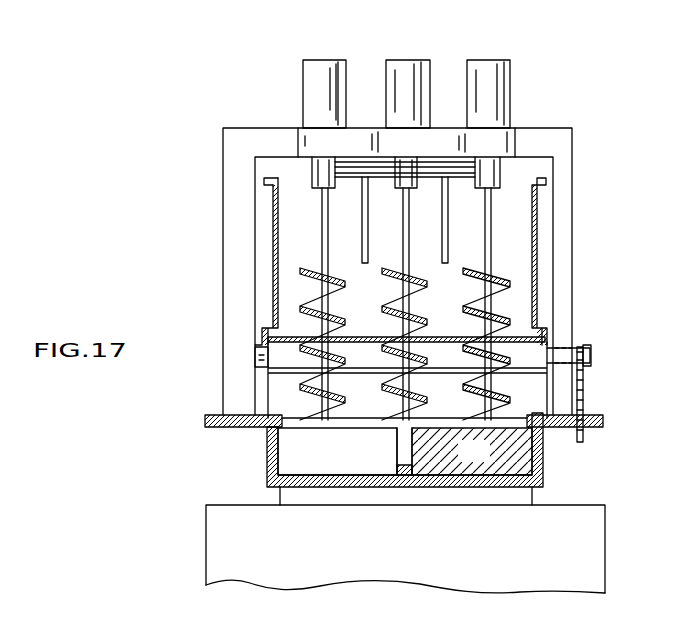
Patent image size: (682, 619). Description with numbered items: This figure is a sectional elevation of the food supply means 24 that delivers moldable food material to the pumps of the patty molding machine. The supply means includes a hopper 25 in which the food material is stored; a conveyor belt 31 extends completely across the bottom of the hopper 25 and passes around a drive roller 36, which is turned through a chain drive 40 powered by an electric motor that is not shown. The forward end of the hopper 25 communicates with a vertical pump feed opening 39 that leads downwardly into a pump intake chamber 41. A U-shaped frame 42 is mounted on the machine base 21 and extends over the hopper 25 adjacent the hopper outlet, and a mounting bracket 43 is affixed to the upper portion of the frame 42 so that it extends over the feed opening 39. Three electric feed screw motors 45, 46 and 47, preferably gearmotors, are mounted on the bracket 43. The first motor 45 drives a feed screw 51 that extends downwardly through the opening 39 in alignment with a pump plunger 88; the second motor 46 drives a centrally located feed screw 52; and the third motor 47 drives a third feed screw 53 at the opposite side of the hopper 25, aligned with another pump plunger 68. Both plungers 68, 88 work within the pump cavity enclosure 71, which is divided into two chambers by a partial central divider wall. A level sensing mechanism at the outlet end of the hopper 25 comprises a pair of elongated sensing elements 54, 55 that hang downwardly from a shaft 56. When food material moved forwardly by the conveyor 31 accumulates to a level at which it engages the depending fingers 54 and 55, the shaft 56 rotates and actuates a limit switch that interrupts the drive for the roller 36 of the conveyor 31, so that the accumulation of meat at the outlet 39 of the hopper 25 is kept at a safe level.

The machine base 21 is at (587, 552).
The food supply means 24 is at (556, 72).
The hopper 25 is at (273, 256).
The conveyor belt 31 is at (363, 336).
The drive roller 36 is at (533, 357).
The pump feed opening 39 is at (460, 327).
The chain drive 40 is at (585, 390).
The pump intake chamber 41 is at (407, 438).
The U-shaped frame 42 is at (238, 152).
The mounting bracket 43 is at (503, 138).
The electric feed screw motor 45 is at (317, 72).
The electric feed screw motor 46 is at (410, 73).
The electric feed screw motor 47 is at (502, 62).
The feed screw 51 is at (320, 245).
The feed screw 52 is at (401, 250).
The feed screw 53 is at (493, 255).
The sensing element 54 is at (361, 250).
The sensing element 55 is at (443, 249).
The shaft 56 is at (437, 163).
The plunger 68 is at (487, 463).
The pump cavity enclosure 71 is at (543, 463).
The plunger 88 is at (353, 462).